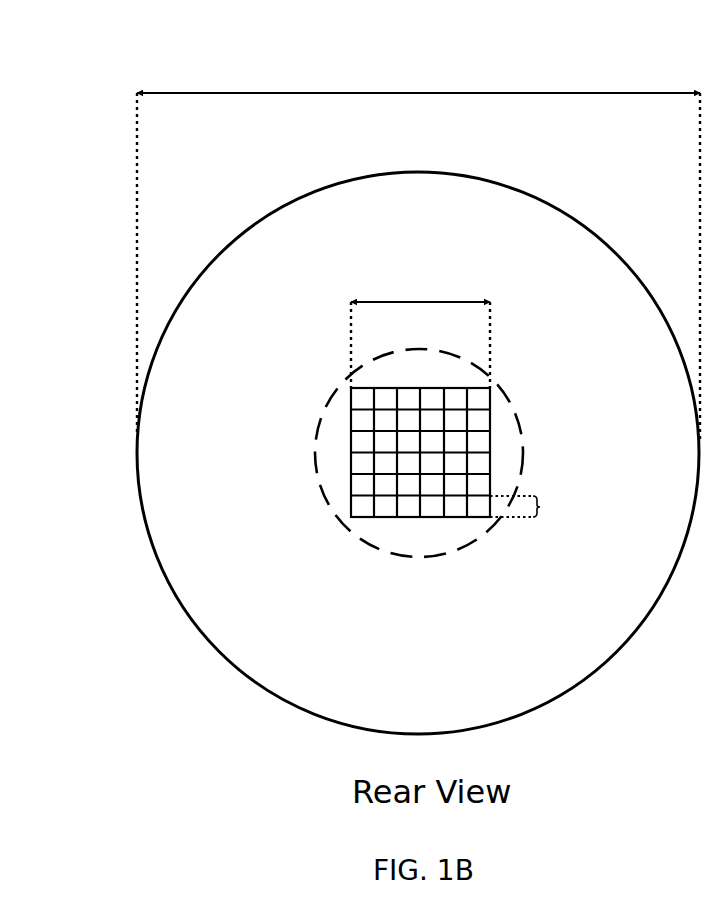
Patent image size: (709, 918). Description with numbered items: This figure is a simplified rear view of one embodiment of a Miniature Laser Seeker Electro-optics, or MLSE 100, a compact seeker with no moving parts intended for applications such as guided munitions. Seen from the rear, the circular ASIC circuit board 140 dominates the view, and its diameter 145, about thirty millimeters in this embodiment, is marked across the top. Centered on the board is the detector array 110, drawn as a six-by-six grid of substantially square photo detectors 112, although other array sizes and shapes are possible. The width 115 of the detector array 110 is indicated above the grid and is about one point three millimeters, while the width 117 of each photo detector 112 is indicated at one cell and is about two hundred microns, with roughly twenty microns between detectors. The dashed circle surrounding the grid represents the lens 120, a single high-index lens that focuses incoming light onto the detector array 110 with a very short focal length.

The Miniature Laser Seeker Electro-optics (MLSE) 100 is at (110, 158).
The detector array 110 is at (342, 427).
The photo detector 112 is at (408, 503).
The width of the detector array 115 is at (426, 302).
The width of each photo detector 117 is at (535, 506).
The lens 120 is at (315, 452).
The ASIC circuit board 140 is at (134, 467).
The diameter of the ASIC circuit board 145 is at (417, 93).